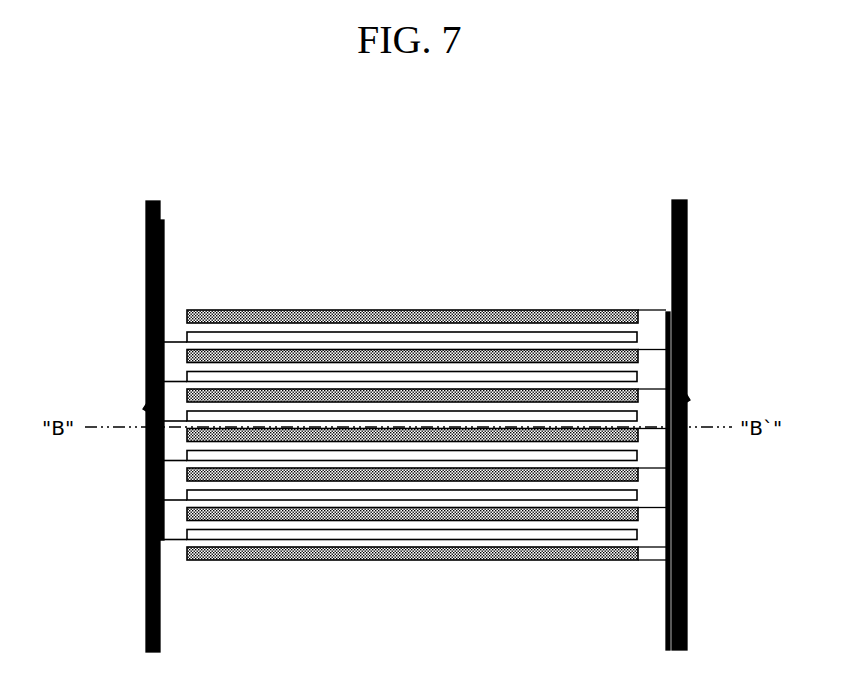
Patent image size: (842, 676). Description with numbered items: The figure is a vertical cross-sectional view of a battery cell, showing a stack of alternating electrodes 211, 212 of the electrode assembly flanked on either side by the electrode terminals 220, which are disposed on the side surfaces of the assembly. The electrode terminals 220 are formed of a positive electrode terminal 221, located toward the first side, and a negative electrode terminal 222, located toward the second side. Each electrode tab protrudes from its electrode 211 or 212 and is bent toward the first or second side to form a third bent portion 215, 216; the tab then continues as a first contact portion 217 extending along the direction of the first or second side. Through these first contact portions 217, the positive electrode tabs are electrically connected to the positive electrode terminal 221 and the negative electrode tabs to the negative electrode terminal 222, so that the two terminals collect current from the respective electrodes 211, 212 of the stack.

The electrode 211 is at (262, 537).
The electrode 212 is at (560, 312).
The third bent portion 215 is at (163, 542).
The third bent portion 216 is at (667, 312).
The first contact portion 217 is at (163, 290).
The electrode terminal 220 is at (148, 411).
The positive electrode terminal 221 is at (147, 264).
The negative electrode terminal 222 is at (687, 587).